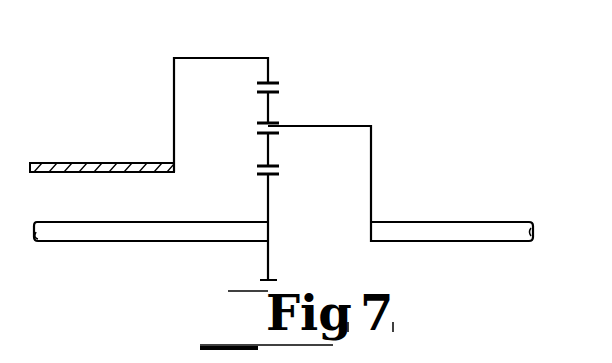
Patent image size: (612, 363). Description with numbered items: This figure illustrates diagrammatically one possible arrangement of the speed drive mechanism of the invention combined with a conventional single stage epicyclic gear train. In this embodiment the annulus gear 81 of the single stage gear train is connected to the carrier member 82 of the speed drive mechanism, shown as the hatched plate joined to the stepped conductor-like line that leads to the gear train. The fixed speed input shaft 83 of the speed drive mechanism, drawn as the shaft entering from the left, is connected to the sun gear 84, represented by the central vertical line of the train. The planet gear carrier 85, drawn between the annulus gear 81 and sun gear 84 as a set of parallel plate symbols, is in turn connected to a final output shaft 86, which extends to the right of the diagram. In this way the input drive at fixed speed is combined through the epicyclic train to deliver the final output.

The annulus gear 81 is at (268, 72).
The carrier member 82 is at (66, 163).
The fixed speed input shaft 83 is at (94, 238).
The sun gear 84 is at (270, 258).
The planet gear carrier 85 is at (268, 108).
The final output shaft 86 is at (495, 222).